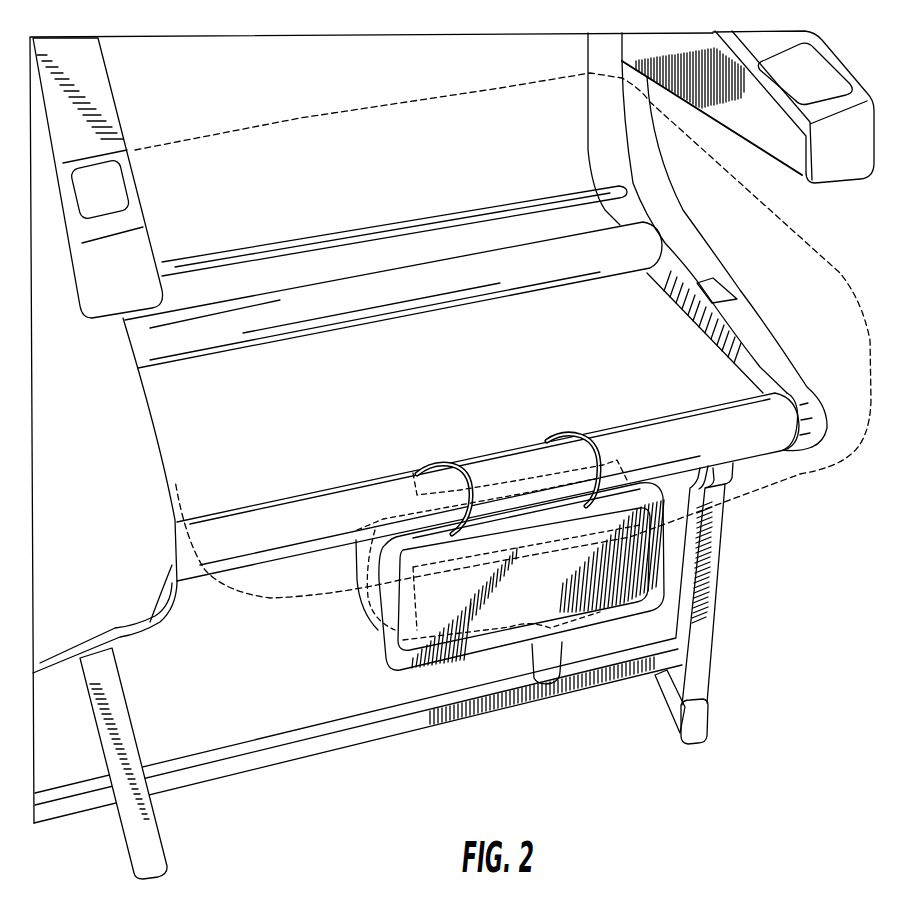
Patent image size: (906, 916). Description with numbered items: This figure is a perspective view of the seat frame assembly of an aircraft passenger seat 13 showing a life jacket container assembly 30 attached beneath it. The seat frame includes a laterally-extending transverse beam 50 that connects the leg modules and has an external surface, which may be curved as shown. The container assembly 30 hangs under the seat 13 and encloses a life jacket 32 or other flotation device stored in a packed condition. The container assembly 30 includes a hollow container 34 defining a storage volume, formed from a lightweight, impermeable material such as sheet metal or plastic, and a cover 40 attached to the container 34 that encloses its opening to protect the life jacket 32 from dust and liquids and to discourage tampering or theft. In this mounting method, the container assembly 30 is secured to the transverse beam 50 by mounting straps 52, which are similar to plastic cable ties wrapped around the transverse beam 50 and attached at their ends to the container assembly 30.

The seat 13 is at (812, 232).
The life jacket container assembly 30 is at (447, 572).
The life jacket 32 is at (417, 640).
The hollow container 34 is at (357, 607).
The cover 40 is at (480, 644).
The transverse beam 50 is at (753, 440).
The mounting straps 52 is at (450, 466).